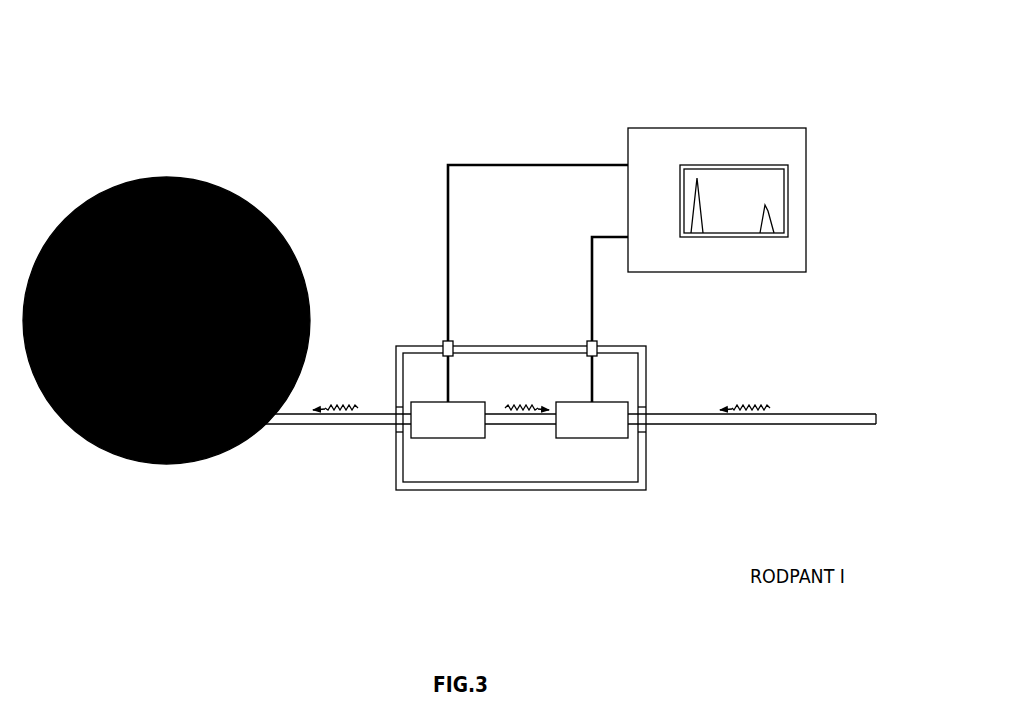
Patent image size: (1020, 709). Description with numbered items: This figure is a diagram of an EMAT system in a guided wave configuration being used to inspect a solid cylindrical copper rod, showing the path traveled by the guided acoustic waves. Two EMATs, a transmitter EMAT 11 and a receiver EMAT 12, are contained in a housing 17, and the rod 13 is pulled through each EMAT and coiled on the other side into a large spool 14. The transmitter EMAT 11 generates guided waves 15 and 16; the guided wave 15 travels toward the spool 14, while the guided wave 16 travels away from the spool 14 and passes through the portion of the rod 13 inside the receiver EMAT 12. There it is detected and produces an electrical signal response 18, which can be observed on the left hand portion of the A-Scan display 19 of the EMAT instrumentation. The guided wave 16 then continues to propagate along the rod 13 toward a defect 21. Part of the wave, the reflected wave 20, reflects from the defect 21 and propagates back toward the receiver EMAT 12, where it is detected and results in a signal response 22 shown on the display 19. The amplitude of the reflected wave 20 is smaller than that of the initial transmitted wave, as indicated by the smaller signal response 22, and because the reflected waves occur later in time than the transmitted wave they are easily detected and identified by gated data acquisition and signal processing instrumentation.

The transmitter EMAT 11 is at (459, 438).
The receiver EMAT 12 is at (600, 438).
The rod 13 is at (565, 448).
The spool 14 is at (206, 320).
The guided wave 15 is at (354, 385).
The guided wave 16 is at (542, 386).
The housing 17 is at (521, 389).
The signal response 18 is at (748, 146).
The A-Scan display 19 is at (717, 145).
The reflected wave 20 is at (762, 389).
The defect 21 is at (788, 436).
The signal response 22 is at (813, 167).